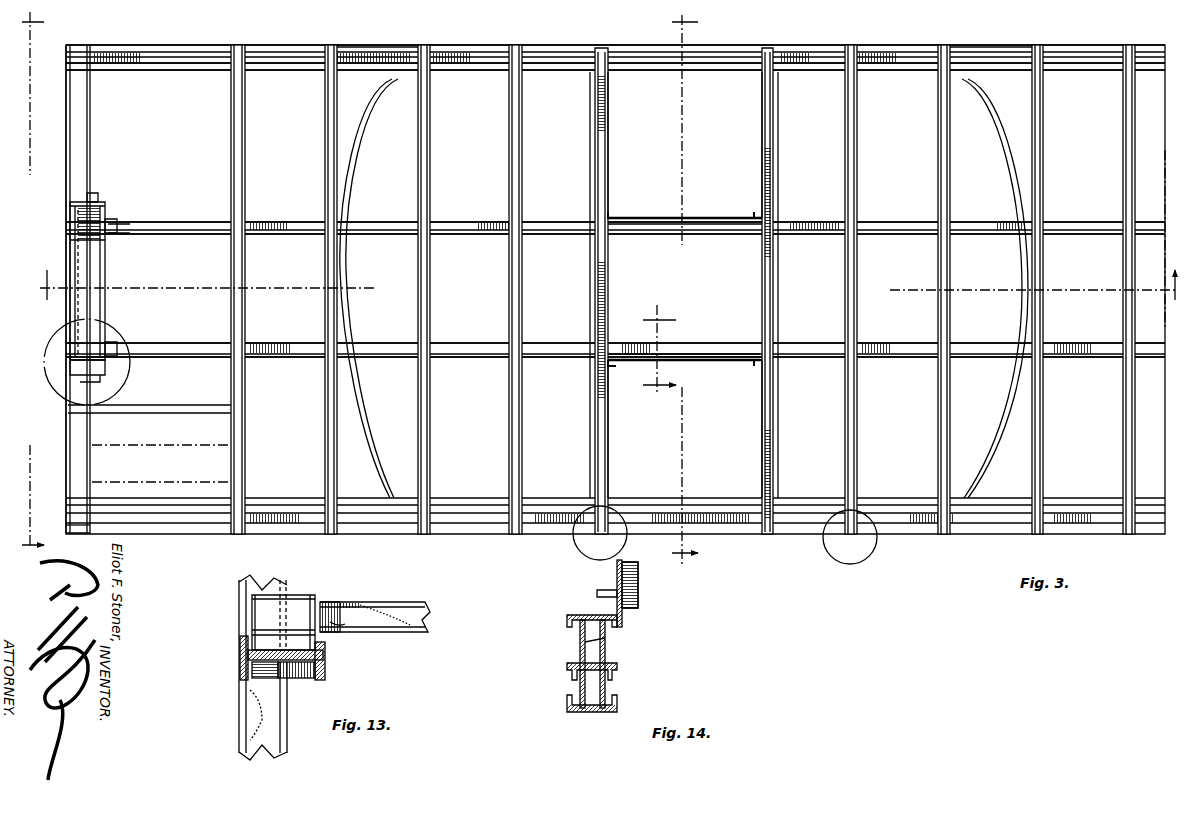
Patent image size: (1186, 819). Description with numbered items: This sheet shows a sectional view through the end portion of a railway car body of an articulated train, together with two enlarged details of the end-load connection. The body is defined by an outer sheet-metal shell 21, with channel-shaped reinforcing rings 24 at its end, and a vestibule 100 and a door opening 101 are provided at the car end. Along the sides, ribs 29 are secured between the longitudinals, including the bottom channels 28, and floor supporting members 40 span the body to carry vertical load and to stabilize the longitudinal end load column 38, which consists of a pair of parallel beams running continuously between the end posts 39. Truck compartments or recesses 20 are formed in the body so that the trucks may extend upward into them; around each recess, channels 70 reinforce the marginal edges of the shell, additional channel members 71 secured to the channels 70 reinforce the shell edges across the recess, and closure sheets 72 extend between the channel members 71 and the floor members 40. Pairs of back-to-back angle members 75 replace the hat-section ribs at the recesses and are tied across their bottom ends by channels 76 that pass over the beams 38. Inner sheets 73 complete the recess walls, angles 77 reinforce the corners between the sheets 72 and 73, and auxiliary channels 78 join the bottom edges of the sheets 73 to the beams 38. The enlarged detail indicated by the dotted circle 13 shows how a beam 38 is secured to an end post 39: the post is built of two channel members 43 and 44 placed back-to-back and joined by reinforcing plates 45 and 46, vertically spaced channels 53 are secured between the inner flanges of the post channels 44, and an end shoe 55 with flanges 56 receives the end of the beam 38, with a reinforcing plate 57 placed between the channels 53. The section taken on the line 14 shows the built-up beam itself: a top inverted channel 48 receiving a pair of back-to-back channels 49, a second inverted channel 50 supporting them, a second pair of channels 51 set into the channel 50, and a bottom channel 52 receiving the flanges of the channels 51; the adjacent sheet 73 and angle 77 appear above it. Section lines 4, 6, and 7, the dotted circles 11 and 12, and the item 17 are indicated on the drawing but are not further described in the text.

In FIG. 3, the vestibule 100 is at (158, 85).
In FIG. 3, the reinforcing ring 24 is at (84, 45).
In FIG. 13, the reinforcing ring 24 is at (250, 726).
In FIG. 3, the floor supporting member 40 is at (245, 166).
In FIG. 3, the bottom channel 28 is at (898, 60).
In FIG. 3, the outer sheet-metal shell 21 is at (838, 45).
In FIG. 3, the rib 29 is at (420, 45).
In FIG. 3, the channel 70 is at (808, 72).
In FIG. 3, the truck compartment 20 is at (681, 292).
In FIG. 3, the angle member 75 is at (606, 50).
In FIG. 3, the sheet 73 is at (690, 218).
In FIG. 14, the sheet 73 is at (617, 578).
In FIG. 3, the angle 77 is at (612, 216).
In FIG. 14, the angle 77 is at (630, 598).
In FIG. 3, the closure sheet 72 is at (608, 115).
In FIG. 3, the auxiliary channel 78 is at (712, 234).
In FIG. 14, the auxiliary channel 78 is at (597, 593).
In FIG. 3, the channel 76 is at (774, 290).
In FIG. 3, the channel member 71 is at (352, 412).
In FIG. 3, the end load column 38 is at (478, 222).
In FIG. 13, the end load column 38 is at (398, 602).
In FIG. 14, the end load column 38 is at (580, 645).
In FIG. 3, the channel 53 is at (100, 278).
In FIG. 13, the channel 53 is at (296, 590).
In FIG. 3, the reinforcing plate 57 is at (72, 232).
In FIG. 13, the reinforcing plate 57 is at (272, 630).
In FIG. 3, the flange 56 is at (110, 215).
In FIG. 13, the flange 56 is at (330, 603).
In FIG. 3, the end shoe 55 is at (122, 236).
In FIG. 13, the end shoe 55 is at (340, 628).
In FIG. 3, the end post 39 is at (95, 204).
In FIG. 13, the end post 39 is at (306, 684).
In FIG. 3, the section line 6 is at (34, 282).
In FIG. 3, the section line 4 is at (609, 240).
In FIG. 3, the section line 7 is at (688, 284).
In FIG. 3, the section line 14 is at (653, 352).
In FIG. 3, the detail circle 13 is at (46, 352).
In FIG. 3, the detail circle 12 is at (576, 548).
In FIG. 3, the detail circle 11 is at (835, 556).
In FIG. 3, the door opening 101 is at (182, 484).
In FIG. 13, the channel member 44 is at (248, 654).
In FIG. 13, the reinforcing plate 45 is at (325, 668).
In FIG. 13, the channel member 43 is at (252, 670).
In FIG. 13, the reinforcing plate 46 is at (240, 680).
In FIG. 14, the top inverted channel 48 is at (570, 615).
In FIG. 14, the channel 49 is at (600, 650).
In FIG. 14, the second inverted channel 50 is at (618, 672).
In FIG. 14, the channel 51 is at (575, 688).
In FIG. 14, the channel 52 is at (580, 713).
In FIG. 14, the glazing strip 17 is at (636, 600).